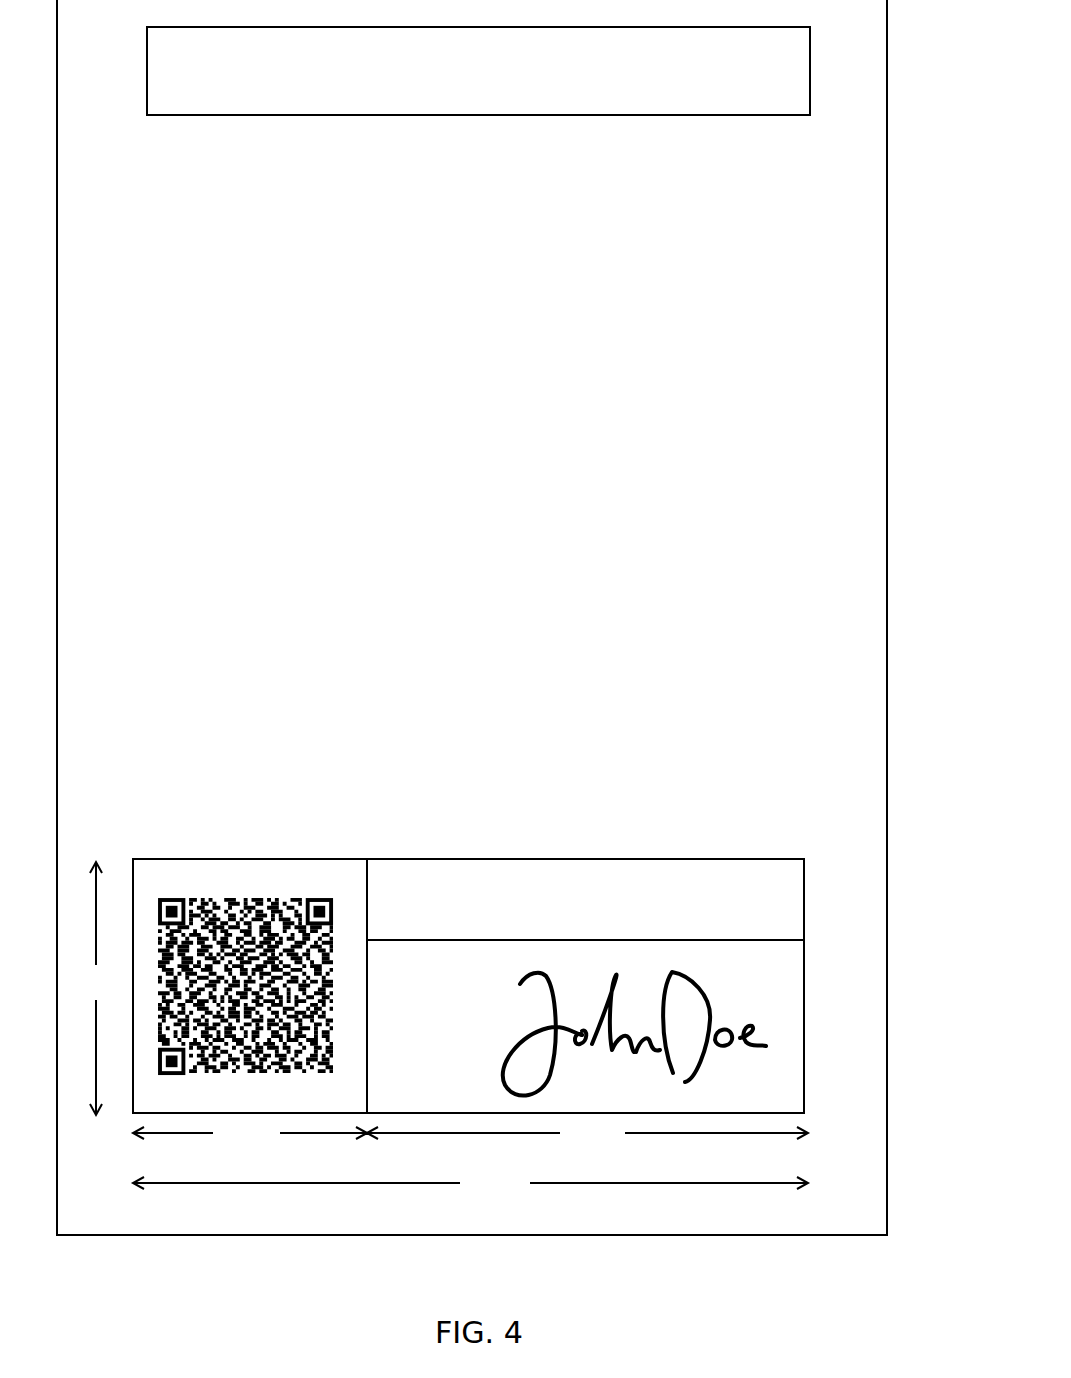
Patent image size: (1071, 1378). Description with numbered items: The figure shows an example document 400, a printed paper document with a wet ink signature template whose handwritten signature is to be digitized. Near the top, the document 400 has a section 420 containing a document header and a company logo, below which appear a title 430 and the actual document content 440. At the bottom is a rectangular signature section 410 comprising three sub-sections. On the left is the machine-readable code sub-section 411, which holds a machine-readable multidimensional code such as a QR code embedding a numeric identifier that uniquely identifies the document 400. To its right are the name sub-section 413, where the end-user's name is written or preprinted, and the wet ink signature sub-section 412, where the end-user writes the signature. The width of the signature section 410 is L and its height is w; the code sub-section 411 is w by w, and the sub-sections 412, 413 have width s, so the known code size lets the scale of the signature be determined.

The document 400 is at (887, 66).
The signature section 410 is at (487, 831).
The machine-readable code sub-section 411 is at (234, 859).
The wet ink signature sub-section 412 is at (805, 1024).
The name sub-section 413 is at (805, 899).
The section 420 is at (811, 56).
The title 430 is at (651, 244).
The document content 440 is at (561, 550).